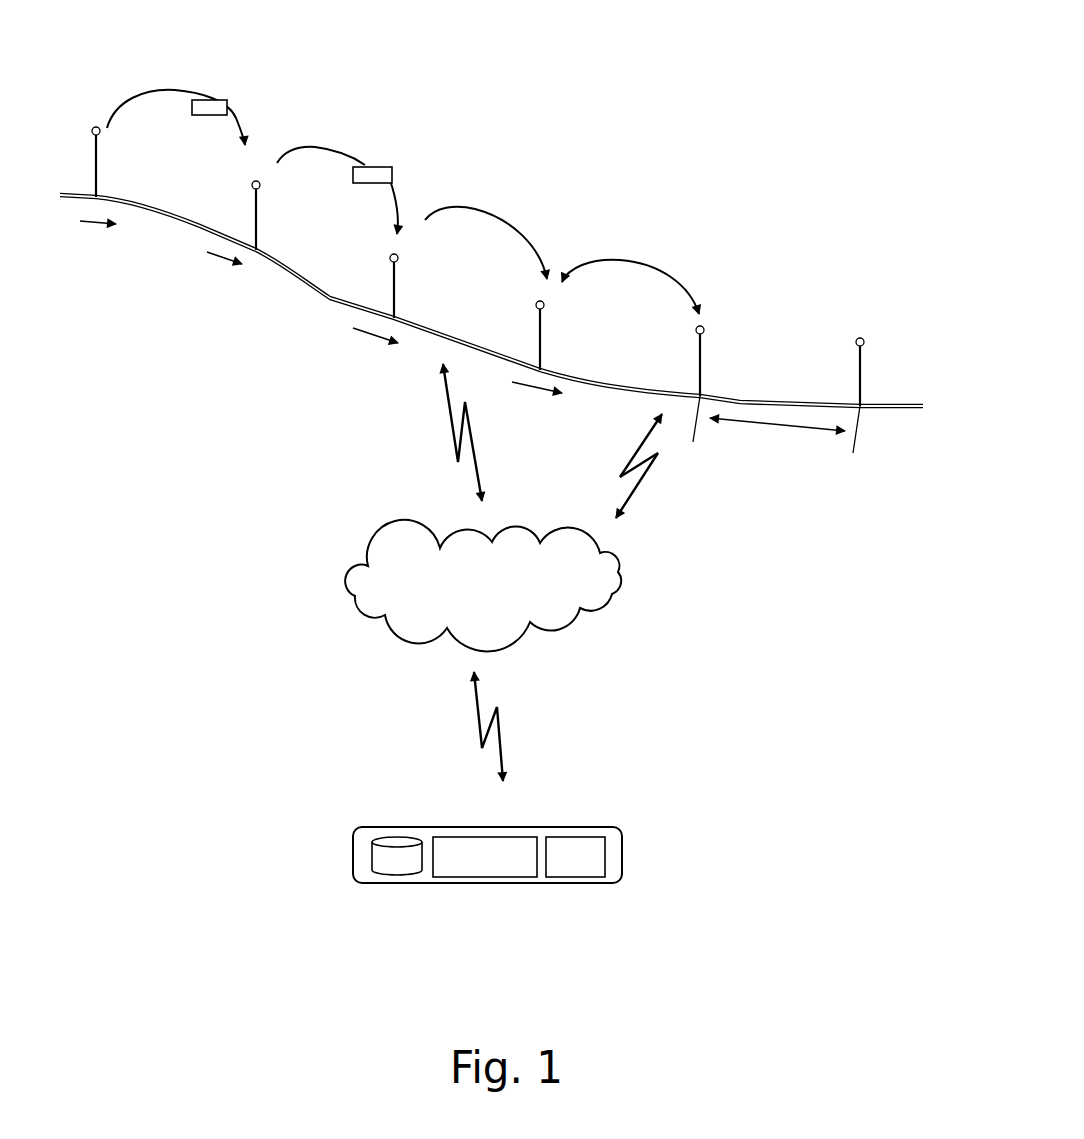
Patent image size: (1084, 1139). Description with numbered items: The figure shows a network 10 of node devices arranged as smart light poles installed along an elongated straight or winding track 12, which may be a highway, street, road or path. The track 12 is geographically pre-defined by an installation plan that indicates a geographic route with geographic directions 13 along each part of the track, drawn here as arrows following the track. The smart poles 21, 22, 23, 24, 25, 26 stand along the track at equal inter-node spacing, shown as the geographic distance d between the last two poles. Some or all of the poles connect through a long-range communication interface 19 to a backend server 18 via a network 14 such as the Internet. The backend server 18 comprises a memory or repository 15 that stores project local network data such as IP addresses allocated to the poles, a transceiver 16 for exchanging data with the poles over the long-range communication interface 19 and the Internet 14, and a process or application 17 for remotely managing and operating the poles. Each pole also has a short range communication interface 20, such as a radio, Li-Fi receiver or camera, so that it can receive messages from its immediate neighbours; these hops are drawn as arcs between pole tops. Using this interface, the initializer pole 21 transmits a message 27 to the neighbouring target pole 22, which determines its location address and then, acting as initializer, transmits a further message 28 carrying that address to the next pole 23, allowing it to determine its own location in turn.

The network 10 is at (631, 125).
The elongated track 12 is at (330, 298).
The geographic directions 13 is at (323, 328).
The network 14 is at (597, 580).
The memory or repository 15 is at (398, 877).
The transceiver 16 is at (486, 877).
The process or application 17 is at (575, 877).
The backend server 18 is at (540, 891).
The long-range communication interface 19 is at (448, 418).
The short range communication interface 20 is at (183, 90).
The smart pole 21 is at (98, 172).
The smart pole 22 is at (259, 161).
The smart pole 23 is at (421, 223).
The smart pole 24 is at (542, 336).
The smart pole 25 is at (700, 360).
The smart pole 26 is at (860, 370).
The message 27 is at (213, 100).
The further message 28 is at (393, 165).